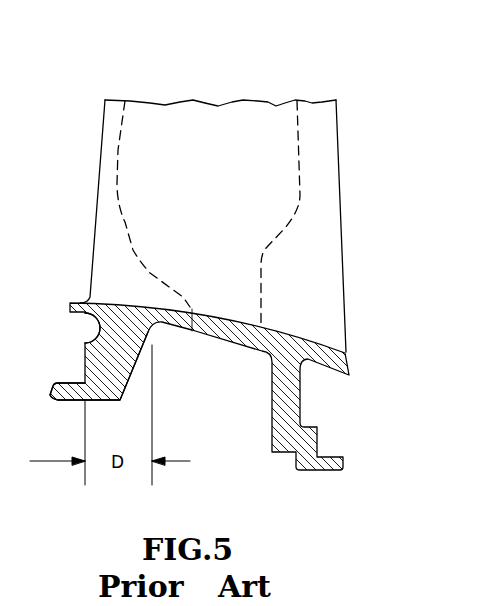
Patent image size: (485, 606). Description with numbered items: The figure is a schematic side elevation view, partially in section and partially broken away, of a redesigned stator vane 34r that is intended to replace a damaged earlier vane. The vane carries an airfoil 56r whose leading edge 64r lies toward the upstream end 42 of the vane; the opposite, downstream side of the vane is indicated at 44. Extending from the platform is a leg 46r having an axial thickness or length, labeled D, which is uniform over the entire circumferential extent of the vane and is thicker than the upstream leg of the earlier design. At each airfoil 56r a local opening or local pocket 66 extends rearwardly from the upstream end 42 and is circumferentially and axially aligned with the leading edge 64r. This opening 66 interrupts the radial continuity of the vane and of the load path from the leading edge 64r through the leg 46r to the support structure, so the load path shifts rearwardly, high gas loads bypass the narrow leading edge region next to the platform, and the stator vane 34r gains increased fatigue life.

The redesigned stator vane 34r is at (210, 179).
The upstream end 42 is at (105, 98).
The second end of blade 44 is at (334, 100).
The leading edge 64r is at (97, 165).
The airfoil 56r is at (110, 222).
The local opening or local pocket 66 is at (93, 332).
The leg 46r is at (98, 368).